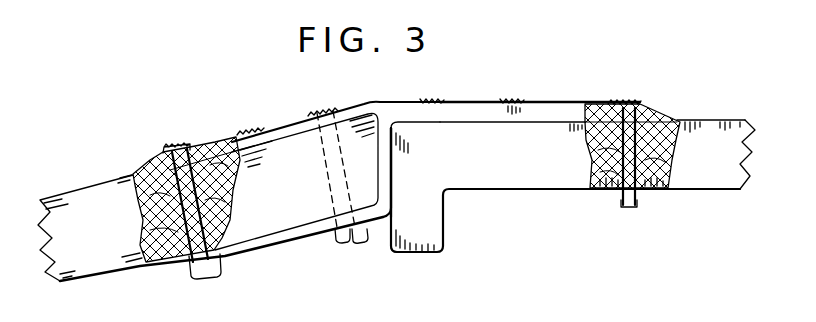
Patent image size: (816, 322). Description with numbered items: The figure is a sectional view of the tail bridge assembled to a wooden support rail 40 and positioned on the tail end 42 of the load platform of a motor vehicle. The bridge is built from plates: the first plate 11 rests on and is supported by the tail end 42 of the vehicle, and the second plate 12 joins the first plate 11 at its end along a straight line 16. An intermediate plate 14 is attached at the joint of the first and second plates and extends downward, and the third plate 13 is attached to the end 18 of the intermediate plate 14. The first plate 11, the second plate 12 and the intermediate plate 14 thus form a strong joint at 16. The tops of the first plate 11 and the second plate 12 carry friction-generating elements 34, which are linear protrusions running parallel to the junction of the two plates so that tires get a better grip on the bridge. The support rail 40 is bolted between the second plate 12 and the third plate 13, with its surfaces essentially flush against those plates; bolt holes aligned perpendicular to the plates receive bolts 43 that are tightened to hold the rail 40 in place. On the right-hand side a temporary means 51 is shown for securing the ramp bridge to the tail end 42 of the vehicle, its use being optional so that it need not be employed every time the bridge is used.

The first plate 11 is at (523, 113).
The second plate 12 is at (216, 146).
The third plate 13 is at (270, 250).
The intermediate plate 14 is at (387, 168).
The straight line joint 16 is at (388, 118).
The end of intermediate plate 18 is at (388, 225).
The friction-generating elements 34 is at (310, 115).
The support rail 40 is at (108, 252).
The tail end of load platform 42 is at (507, 180).
The bolts 43 is at (185, 173).
The temporary securing means 51 is at (632, 200).